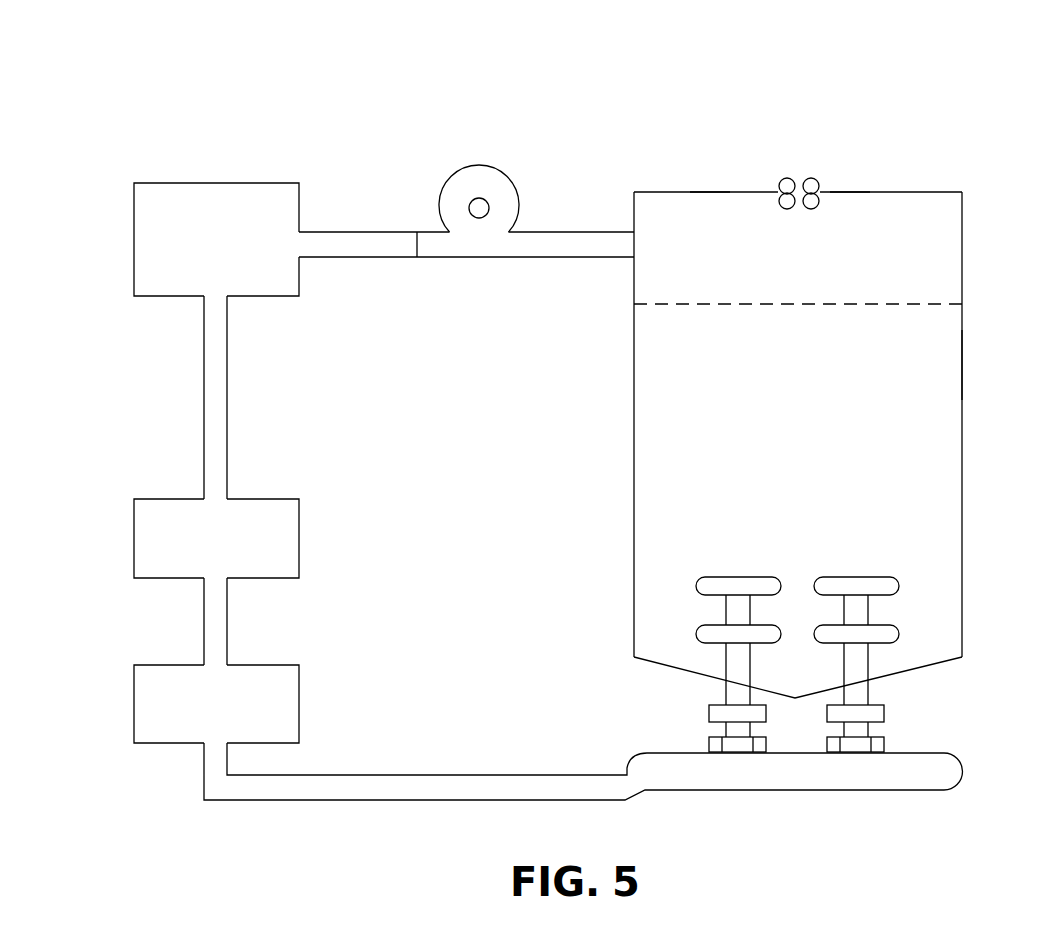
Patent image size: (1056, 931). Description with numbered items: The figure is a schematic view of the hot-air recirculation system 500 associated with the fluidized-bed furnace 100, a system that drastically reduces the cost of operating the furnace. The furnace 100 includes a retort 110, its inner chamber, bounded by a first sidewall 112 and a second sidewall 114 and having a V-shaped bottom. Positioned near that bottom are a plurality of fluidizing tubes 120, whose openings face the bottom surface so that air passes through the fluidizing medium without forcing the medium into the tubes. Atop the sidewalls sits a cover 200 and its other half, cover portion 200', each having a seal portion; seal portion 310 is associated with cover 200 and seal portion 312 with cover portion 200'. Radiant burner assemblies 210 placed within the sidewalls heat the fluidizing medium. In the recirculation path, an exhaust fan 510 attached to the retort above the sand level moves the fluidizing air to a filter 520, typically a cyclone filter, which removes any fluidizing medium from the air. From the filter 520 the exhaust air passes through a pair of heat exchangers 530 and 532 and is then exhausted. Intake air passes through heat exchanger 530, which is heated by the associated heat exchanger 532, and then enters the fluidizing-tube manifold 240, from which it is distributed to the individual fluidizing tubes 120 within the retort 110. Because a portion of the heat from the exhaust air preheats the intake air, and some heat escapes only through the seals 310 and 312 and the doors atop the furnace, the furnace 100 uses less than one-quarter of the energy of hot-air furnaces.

The hot-air recirculation system 500 is at (360, 125).
The exhaust fan 510 is at (479, 165).
The filter 520 is at (134, 237).
The heat exchanger 530 is at (134, 537).
The heat exchanger 532 is at (134, 702).
The fluidized-bed furnace 100 is at (947, 250).
The retort 110 is at (954, 355).
The first sidewall 112 is at (634, 435).
The second sidewall 114 is at (964, 444).
The fluidizing tubes 120 is at (868, 578).
The cover 200 is at (873, 169).
The cover portion 200' is at (683, 167).
The radiant burner assemblies 210 is at (915, 303).
The fluidizing-tube manifold 240 is at (805, 785).
The seal portion 310 is at (813, 178).
The seal portion 312 is at (783, 178).